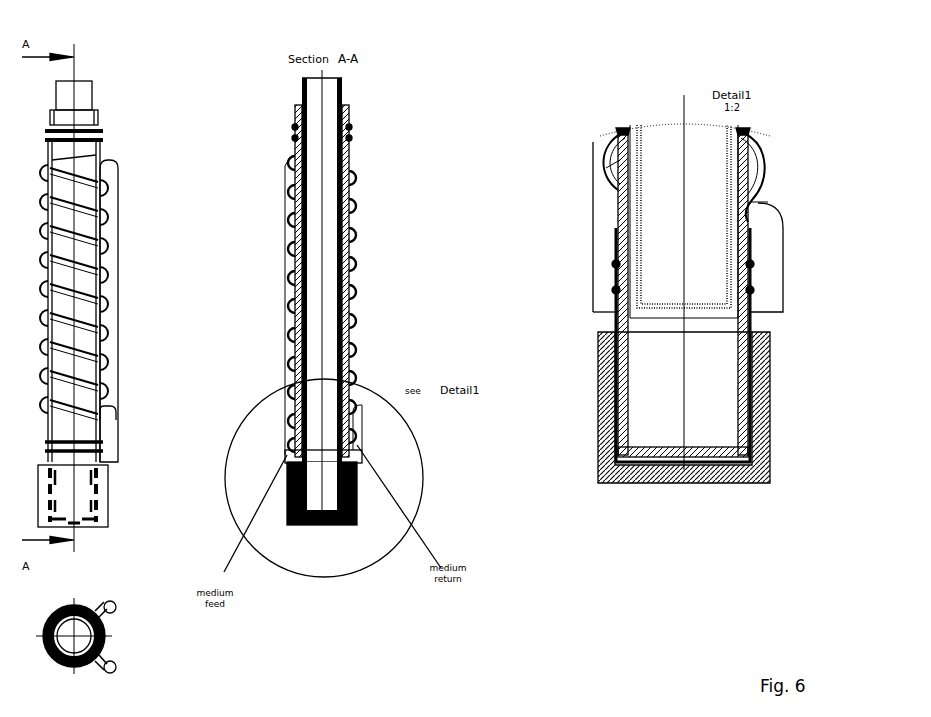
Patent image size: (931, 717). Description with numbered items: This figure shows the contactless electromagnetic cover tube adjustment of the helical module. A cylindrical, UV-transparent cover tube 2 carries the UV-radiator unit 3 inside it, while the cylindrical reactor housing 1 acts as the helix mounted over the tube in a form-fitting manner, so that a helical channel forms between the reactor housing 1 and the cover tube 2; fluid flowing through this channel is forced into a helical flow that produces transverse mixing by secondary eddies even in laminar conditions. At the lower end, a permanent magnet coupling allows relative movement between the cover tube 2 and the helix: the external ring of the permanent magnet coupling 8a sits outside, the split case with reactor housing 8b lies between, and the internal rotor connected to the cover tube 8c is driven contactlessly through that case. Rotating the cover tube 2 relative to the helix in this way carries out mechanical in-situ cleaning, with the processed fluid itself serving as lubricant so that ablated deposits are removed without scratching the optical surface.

The cylindrical reactor housing 1 is at (757, 138).
The cylindrical UV-transparent cover tube 2 is at (752, 204).
The UV-radiator unit 3 is at (684, 166).
The external ring of permanent magnet coupling 8a is at (769, 414).
The split case with reactor housing 8b is at (715, 452).
The internal rotor connected to cover tube 8c is at (658, 458).